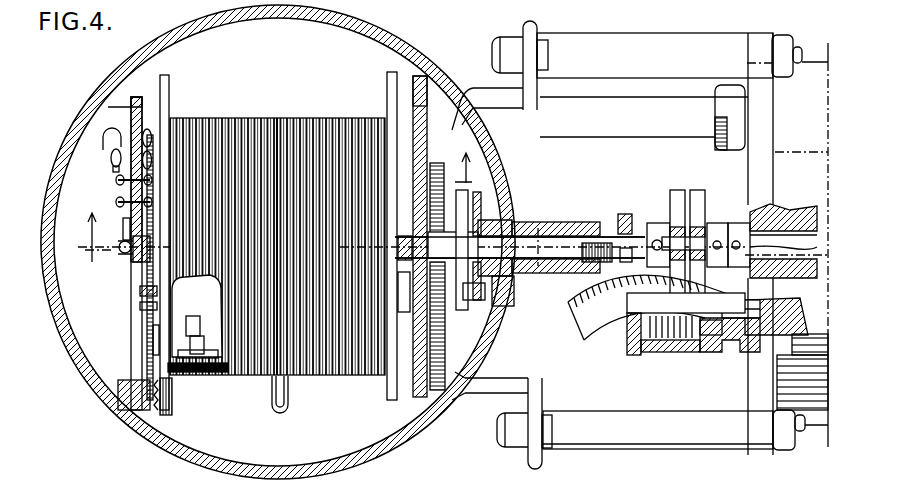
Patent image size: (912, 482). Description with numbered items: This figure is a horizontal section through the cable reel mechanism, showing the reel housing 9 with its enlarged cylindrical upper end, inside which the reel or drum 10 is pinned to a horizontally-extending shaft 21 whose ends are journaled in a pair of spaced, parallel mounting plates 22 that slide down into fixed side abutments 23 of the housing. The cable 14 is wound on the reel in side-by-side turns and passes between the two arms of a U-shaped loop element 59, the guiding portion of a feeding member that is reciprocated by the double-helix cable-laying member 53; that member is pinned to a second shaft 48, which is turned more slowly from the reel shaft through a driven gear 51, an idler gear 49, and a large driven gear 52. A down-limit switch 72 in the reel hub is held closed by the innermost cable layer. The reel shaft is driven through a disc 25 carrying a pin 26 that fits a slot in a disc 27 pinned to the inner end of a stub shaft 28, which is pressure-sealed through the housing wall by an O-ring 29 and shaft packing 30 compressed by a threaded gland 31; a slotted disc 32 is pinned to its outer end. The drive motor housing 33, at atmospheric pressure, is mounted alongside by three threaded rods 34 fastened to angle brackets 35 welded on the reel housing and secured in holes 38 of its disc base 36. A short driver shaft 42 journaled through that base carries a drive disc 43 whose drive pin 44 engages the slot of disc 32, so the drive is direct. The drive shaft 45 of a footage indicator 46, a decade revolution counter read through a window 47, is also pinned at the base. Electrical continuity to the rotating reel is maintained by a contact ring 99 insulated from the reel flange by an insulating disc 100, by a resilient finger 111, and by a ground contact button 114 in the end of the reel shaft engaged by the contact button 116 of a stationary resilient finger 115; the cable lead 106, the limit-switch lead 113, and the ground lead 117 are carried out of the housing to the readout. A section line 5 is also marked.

The section line 5- 5 is at (286, 215).
The reel housing 9 is at (392, 42).
The reel or drum 10 is at (168, 88).
The cable 14 is at (293, 117).
The shaft 21 is at (147, 242).
The mounting plates 22 is at (415, 108).
The side abutments 23 is at (128, 98).
The disc 25 is at (462, 300).
The pin 26 is at (485, 290).
The disc 27 is at (502, 220).
The stub shaft 28 is at (525, 245).
The O-ring 29 is at (515, 280).
The shaft packing 30 is at (568, 213).
The threaded gland 31 is at (627, 213).
The disc 32 is at (673, 193).
The drive motor housing 33 is at (805, 70).
The rods 34 is at (623, 37).
The angle bracket 35 is at (488, 105).
The base 36 is at (760, 383).
The hole 38 is at (753, 42).
The driver shaft 42 is at (777, 238).
The drive disc 43 is at (703, 197).
The drive pin 44 is at (660, 230).
The drive shaft 45 is at (713, 327).
The footage indicator 46 is at (633, 308).
The window 47 is at (652, 350).
The shaft 48 is at (408, 293).
The idler gear 49 is at (433, 163).
The driven gear 51 is at (437, 200).
The large driven gear 52 is at (443, 348).
The cable-laying member 53 is at (363, 328).
The U-shaped loop element 59 is at (290, 413).
The down limit switch 72 is at (195, 295).
The contact ring 99 is at (137, 308).
The insulating disc 100 is at (158, 340).
The electrical lead 106 is at (583, 128).
The resilient finger 111 is at (143, 222).
The electrical lead 113 is at (145, 130).
The ground contact button 114 is at (140, 252).
The resilient finger 115 is at (115, 230).
The contact button 116 is at (140, 290).
The electrical lead 117 is at (108, 148).